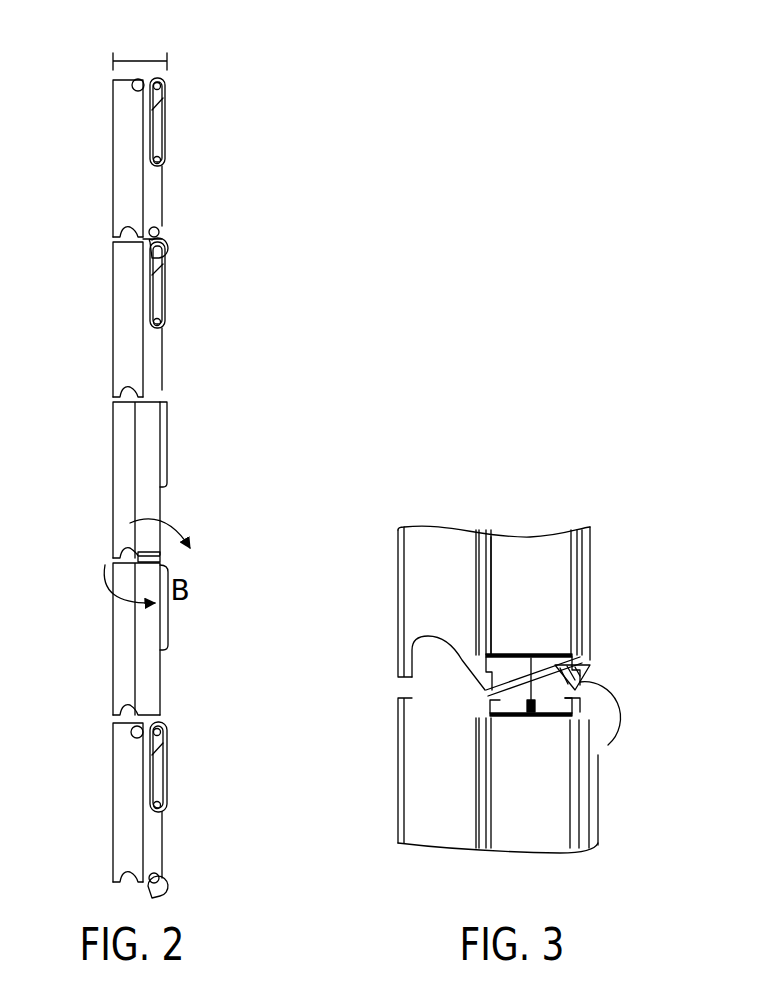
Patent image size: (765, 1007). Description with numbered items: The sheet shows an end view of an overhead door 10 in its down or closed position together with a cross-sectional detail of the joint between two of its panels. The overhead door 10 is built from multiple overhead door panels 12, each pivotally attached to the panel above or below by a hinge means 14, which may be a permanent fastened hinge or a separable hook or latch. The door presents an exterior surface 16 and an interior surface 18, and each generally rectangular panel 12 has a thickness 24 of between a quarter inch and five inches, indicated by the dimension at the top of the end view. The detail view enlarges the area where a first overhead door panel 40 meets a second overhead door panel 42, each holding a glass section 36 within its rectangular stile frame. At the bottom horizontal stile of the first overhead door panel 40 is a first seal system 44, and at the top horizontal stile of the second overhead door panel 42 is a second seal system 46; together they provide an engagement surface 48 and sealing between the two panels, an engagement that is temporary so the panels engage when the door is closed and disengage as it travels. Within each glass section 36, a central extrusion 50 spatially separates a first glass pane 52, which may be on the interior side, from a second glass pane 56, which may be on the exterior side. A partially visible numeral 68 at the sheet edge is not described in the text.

In FIG. 2, the overhead door 10 is at (208, 124).
In FIG. 2, the overhead door panel 12 is at (123, 310).
In FIG. 2, the hinge means 14 is at (92, 203).
In FIG. 2, the exterior surface 16 is at (153, 838).
In FIG. 3, the exterior surface 16 is at (592, 566).
In FIG. 2, the interior surface 18 is at (123, 803).
In FIG. 3, the interior surface 18 is at (398, 572).
In FIG. 2, the thickness 24 is at (140, 58).
In FIG. 3, the glass section 36 is at (538, 550).
In FIG. 3, the first overhead door panel 40 is at (600, 518).
In FIG. 3, the second overhead door panel 42 is at (638, 836).
In FIG. 3, the first seal system 44 is at (583, 678).
In FIG. 3, the second seal system 46 is at (573, 706).
In FIG. 3, the engagement surface 48 is at (540, 680).
In FIG. 3, the central extrusion 50 is at (523, 655).
In FIG. 3, the first glass pane 52 is at (486, 532).
In FIG. 3, the second glass pane 56 is at (577, 545).
In FIG. 3, the connector 68 is at (522, 997).